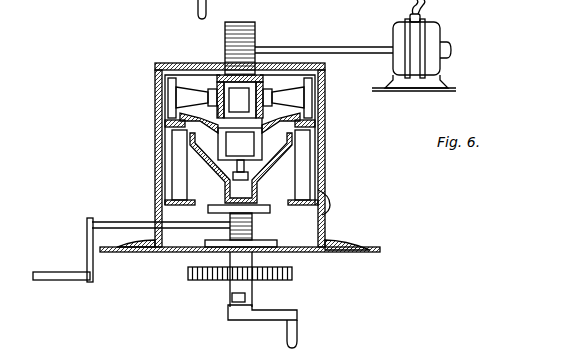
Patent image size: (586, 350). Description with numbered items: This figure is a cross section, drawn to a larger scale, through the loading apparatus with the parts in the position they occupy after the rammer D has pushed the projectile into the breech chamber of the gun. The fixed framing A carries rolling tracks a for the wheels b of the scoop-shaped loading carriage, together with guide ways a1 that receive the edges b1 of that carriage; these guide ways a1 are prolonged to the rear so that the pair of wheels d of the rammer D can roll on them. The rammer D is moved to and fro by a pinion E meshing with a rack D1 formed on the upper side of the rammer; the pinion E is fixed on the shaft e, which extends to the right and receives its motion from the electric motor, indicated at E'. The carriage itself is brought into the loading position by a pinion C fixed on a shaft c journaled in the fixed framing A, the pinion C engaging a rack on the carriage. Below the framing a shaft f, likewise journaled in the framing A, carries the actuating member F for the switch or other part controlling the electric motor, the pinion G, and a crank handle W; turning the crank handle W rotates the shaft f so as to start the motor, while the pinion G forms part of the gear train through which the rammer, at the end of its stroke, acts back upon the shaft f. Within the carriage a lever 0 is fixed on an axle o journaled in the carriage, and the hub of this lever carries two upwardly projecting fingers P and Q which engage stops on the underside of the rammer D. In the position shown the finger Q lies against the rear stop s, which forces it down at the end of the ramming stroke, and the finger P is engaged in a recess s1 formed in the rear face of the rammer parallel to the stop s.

The fixed framing A is at (326, 64).
The pinion C is at (300, 252).
The axle o is at (262, 150).
The lever 0 is at (285, 175).
The pinion E is at (227, 48).
The crank handle W is at (198, 6).
The rack D1 is at (242, 78).
The rammer D is at (240, 92).
The shaft e is at (322, 49).
The electric motor E' is at (418, 45).
The wheels d is at (170, 95).
The edges b1 is at (373, 117).
The guide ways a1 is at (352, 133).
The finger P is at (217, 121).
The finger Q is at (225, 130).
The wheels b is at (178, 178).
The rolling tracks a is at (171, 203).
The rear stop s is at (262, 118).
The recess s1 is at (220, 101).
The shaft c is at (178, 224).
The shaft f is at (246, 283).
The pinion G is at (292, 277).
The actuating member F is at (232, 297).